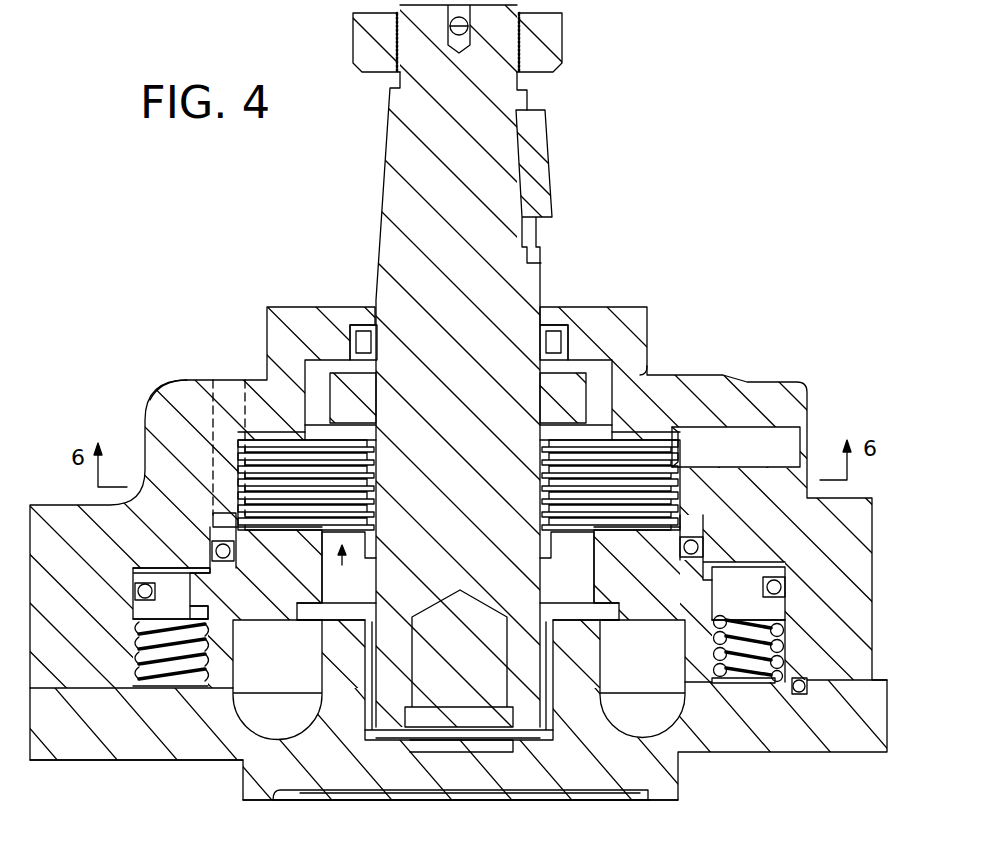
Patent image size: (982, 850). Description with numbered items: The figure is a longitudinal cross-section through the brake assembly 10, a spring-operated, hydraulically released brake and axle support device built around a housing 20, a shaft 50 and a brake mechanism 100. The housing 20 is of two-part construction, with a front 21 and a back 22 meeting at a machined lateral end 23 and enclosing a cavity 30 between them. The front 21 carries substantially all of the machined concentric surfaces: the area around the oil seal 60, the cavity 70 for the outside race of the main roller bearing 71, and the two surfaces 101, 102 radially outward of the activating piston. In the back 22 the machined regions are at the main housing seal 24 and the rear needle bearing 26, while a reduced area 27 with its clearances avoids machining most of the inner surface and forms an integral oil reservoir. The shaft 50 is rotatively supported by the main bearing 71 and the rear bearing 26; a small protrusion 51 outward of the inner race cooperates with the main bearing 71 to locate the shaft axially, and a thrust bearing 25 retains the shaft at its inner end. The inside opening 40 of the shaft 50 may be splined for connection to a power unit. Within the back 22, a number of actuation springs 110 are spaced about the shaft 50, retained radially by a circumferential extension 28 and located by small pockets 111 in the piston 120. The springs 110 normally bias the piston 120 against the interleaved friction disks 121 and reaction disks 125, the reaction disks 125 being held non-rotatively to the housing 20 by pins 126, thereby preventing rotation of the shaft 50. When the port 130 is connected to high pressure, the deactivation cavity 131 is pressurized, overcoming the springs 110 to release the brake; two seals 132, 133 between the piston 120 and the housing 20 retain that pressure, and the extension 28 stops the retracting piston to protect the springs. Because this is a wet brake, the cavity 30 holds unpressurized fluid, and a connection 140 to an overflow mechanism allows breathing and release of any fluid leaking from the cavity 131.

The brake assembly 10 is at (270, 304).
The housing 20 is at (722, 392).
The front of the housing 21 is at (182, 375).
The back of the housing 22 is at (157, 746).
The lateral end of the front of the housing 23 is at (852, 686).
The main housing seal 24 is at (806, 692).
The thrust bearing 25 is at (398, 786).
The rear bearing 26 is at (365, 690).
The reduced area 27 is at (600, 668).
The circumferential extension 28 is at (703, 684).
The cavity 30 is at (559, 583).
The inside opening 40 is at (442, 670).
The shaft 50 is at (380, 181).
The small protrusion 51 is at (542, 430).
The oil seal 60 is at (553, 326).
The cavity for the outside race of the bearing 70 is at (640, 385).
The main roller bearing 71 is at (352, 414).
The brake mechanism 100 is at (336, 576).
The surface radially outward of the activating piston 101 is at (700, 548).
The surface radially outward of the activating piston 102 is at (788, 588).
The actuation springs 110 is at (775, 700).
The small pockets 111 is at (192, 609).
The piston 120 is at (614, 585).
The friction disks 121 is at (235, 455).
The reaction disks 125 is at (228, 516).
The pins 126 is at (226, 395).
The port 130 is at (805, 568).
The deactivation cavity 131 is at (150, 570).
The seal 132 is at (136, 594).
The seal 133 is at (214, 549).
The connection 140 is at (692, 456).